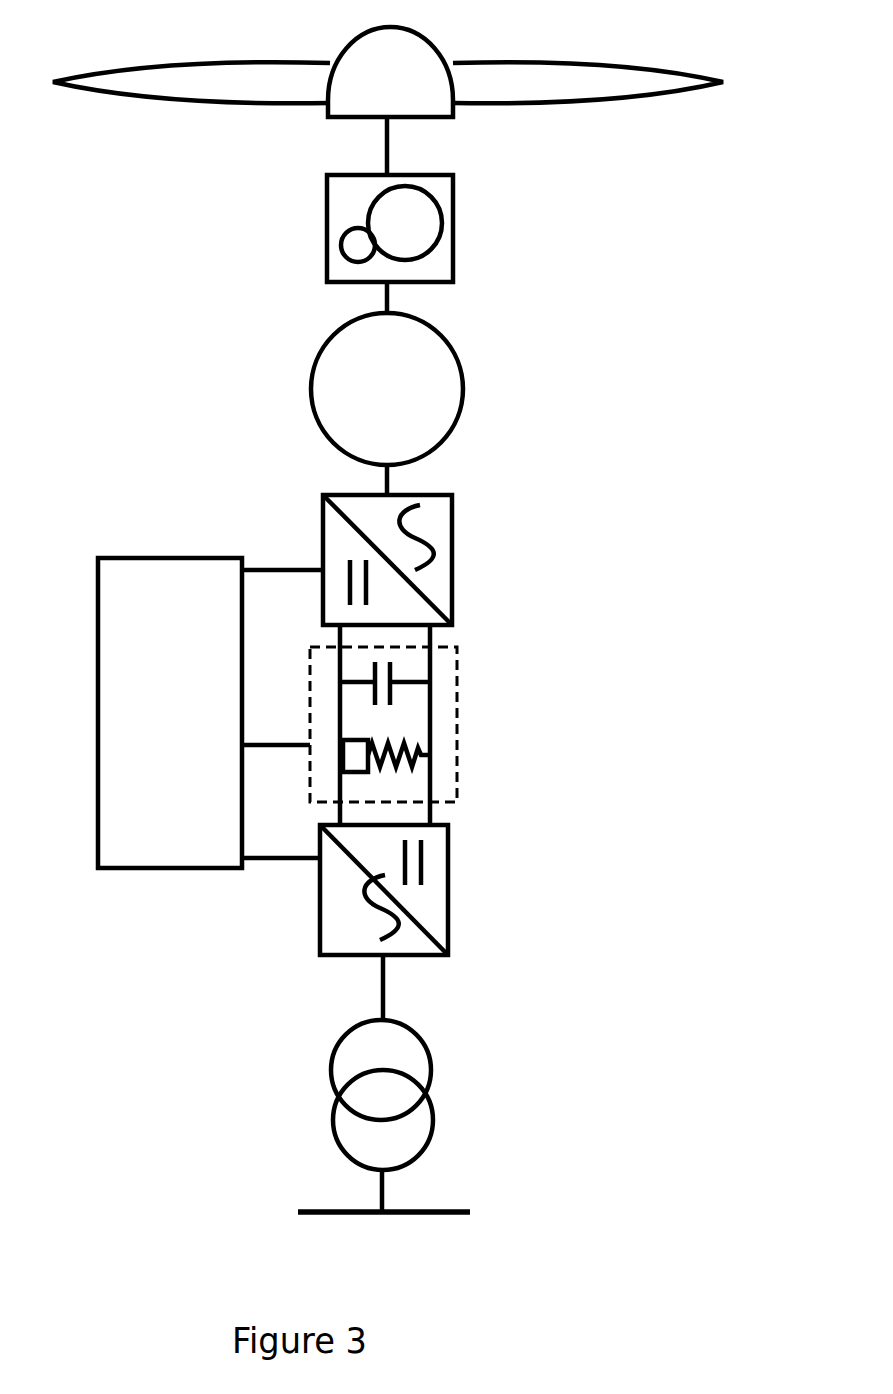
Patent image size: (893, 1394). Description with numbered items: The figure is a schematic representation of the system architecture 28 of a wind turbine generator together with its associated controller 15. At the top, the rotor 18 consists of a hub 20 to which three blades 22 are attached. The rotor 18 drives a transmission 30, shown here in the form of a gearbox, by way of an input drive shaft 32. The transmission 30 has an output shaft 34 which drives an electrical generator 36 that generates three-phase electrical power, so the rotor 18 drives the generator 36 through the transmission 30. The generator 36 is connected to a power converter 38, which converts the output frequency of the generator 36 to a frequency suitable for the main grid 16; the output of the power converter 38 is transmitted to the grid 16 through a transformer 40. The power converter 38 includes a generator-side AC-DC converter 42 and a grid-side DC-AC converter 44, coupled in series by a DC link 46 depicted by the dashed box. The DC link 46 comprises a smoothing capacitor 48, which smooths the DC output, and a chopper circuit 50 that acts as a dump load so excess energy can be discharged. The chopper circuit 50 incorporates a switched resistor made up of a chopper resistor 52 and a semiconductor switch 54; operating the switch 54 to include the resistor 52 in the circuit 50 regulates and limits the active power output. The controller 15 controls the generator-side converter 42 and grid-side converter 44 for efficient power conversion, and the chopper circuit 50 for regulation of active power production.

The controller 15 is at (150, 556).
The main grid 16 is at (452, 1200).
The rotor 18 is at (490, 152).
The hub 20 is at (428, 62).
The blades 22 is at (168, 90).
The WTG architecture 28 is at (598, 358).
The transmission 30 is at (453, 262).
The input drive shaft 32 is at (385, 150).
The output shaft 34 is at (393, 298).
The electrical generator 36 is at (462, 410).
The power converter 38 is at (577, 600).
The transformer 40 is at (430, 1055).
The generator-side AC-DC converter 42 is at (452, 512).
The grid-side DC-AC converter 44 is at (448, 890).
The DC link 46 is at (457, 712).
The smoothing capacitor 48 is at (395, 665).
The chopper circuit 50 is at (412, 839).
The resistor 52 is at (413, 783).
The semiconductor switch 54 is at (343, 758).